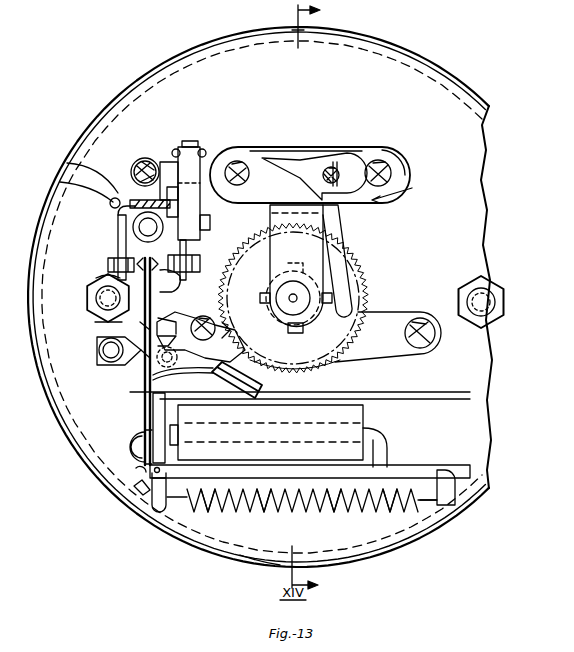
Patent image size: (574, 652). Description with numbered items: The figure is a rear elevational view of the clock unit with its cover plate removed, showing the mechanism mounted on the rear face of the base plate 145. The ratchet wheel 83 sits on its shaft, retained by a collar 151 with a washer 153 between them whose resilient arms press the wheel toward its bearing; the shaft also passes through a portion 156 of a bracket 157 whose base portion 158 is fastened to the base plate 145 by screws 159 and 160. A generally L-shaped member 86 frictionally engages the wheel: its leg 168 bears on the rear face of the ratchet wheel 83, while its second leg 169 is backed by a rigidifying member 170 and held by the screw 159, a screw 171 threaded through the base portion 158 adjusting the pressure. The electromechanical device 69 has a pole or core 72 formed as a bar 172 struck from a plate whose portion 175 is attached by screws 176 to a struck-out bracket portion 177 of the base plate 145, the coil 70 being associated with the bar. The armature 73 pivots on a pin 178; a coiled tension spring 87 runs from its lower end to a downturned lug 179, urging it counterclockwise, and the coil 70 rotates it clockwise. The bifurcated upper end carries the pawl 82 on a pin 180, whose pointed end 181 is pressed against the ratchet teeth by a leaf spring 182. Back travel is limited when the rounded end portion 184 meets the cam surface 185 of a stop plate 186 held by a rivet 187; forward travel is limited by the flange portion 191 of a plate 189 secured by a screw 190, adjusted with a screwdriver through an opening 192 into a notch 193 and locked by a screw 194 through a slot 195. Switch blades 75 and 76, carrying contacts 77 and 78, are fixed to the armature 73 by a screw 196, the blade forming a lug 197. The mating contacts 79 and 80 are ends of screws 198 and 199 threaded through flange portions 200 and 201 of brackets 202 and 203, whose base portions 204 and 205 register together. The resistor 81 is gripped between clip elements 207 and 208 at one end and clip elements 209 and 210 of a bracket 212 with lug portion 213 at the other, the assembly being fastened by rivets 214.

The base plate 145 is at (405, 75).
The bracket 157 is at (355, 150).
The base portion 158 is at (372, 152).
The rigidifying member 170 is at (306, 157).
The second leg 169 is at (292, 160).
The screw 159 is at (240, 160).
The screw 160 is at (385, 165).
The screw 171 is at (333, 167).
The member 86 is at (405, 191).
The portion 156 is at (330, 216).
The leg 168 is at (347, 246).
The collar 151 is at (275, 268).
The washer 153 is at (266, 293).
The flange portion 201 is at (264, 284).
The ratchet wheel 83 is at (362, 276).
The pointed end 181 is at (292, 373).
The plate 189 is at (398, 315).
The screw 190 is at (424, 320).
The pawl 82 is at (198, 345).
The slot 195 is at (204, 316).
The screw 194 is at (228, 328).
The contact 80 is at (172, 280).
The notch 193 is at (178, 318).
The opening 192 is at (172, 330).
The contact 78 is at (147, 289).
The contact 79 is at (98, 280).
The switch blade 75 is at (110, 322).
The switch blade 76 is at (147, 326).
The rivet 187 is at (100, 348).
The stop plate 186 is at (100, 354).
The cam surface 185 is at (143, 360).
The rounded end portion 184 is at (155, 368).
The leaf spring 182 is at (178, 376).
The flange portion 191 is at (262, 386).
The pin 180 is at (144, 393).
The bar 172 is at (332, 424).
The coil 70 is at (365, 412).
The pole or core 72 is at (390, 441).
The downturned lug 179 is at (450, 480).
The spring 87 is at (318, 512).
The portion 175 is at (260, 512).
The screws 176 is at (215, 512).
The struck-out bracket portion 177 is at (335, 512).
The pin 178 is at (152, 478).
The armature 73 is at (137, 450).
The screw 196 is at (135, 470).
The lug 197 is at (140, 485).
The electromechanical device 69 is at (264, 560).
The contact 77 is at (117, 245).
The screw 198 is at (108, 262).
The flange portion 200 is at (118, 222).
The base portion 204 is at (131, 225).
The rivets 214 is at (110, 205).
The lug portion 213 is at (125, 200).
The bracket 212 is at (132, 182).
The base portion 205 is at (67, 163).
The bracket 202 is at (58, 183).
The clip element 209 is at (150, 160).
The clip element 210 is at (198, 150).
The resistor 81 is at (188, 145).
The clip element 207 is at (192, 206).
The clip element 208 is at (211, 224).
The bracket 203 is at (188, 248).
The screw 199 is at (196, 267).